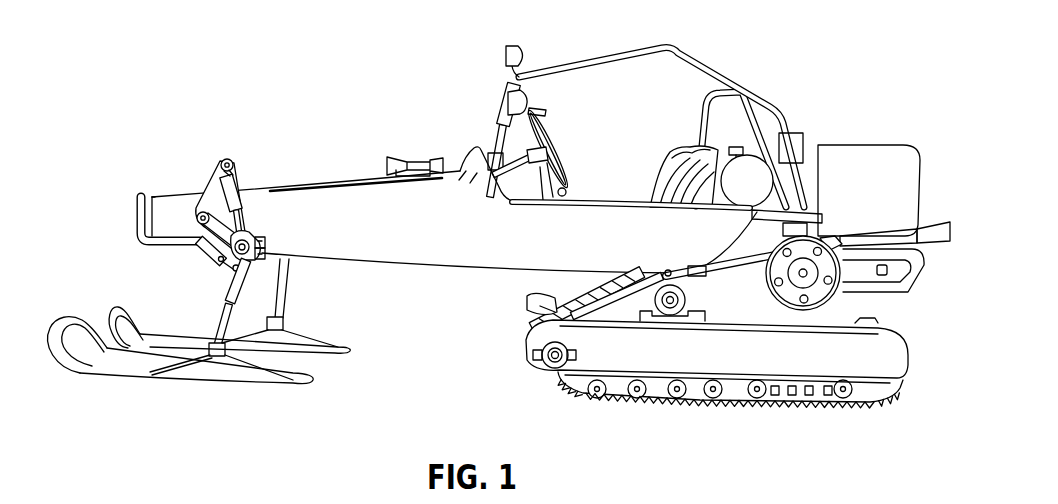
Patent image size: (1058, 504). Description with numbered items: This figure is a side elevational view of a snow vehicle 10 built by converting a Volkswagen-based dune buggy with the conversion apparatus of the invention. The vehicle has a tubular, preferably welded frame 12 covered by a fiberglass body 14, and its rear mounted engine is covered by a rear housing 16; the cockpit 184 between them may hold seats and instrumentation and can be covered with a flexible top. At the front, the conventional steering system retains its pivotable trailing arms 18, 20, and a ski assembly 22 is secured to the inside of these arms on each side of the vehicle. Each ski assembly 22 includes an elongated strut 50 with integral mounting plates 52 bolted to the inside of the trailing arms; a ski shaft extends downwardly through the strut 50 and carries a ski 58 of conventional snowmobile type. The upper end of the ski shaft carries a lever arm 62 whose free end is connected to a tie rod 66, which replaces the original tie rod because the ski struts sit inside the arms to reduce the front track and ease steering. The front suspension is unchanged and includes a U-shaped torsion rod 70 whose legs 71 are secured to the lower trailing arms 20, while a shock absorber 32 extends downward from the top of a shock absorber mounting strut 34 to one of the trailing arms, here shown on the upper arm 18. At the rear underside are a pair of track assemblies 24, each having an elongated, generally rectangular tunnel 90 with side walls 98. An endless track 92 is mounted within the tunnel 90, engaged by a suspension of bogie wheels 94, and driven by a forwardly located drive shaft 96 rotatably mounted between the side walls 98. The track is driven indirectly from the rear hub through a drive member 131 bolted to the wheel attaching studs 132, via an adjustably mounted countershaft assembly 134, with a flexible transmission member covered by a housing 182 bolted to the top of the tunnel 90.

The vehicle 10 is at (318, 112).
The tubular frame 12 is at (700, 57).
The fiberglass body 14 is at (317, 191).
The rear housing 16 is at (897, 143).
The trailing arm 18 is at (231, 232).
The trailing arm 20 is at (207, 252).
The ski assembly 22 is at (240, 312).
The track assembly 24 is at (517, 293).
The shock absorber 32 is at (234, 176).
The shock absorber mounting strut 34 is at (213, 180).
The elongated strut 50 is at (222, 316).
The mounting plates 52 is at (239, 285).
The ski 58 is at (110, 336).
The lever arm 62 is at (266, 255).
The tie rod 66 is at (265, 240).
The torsion rod 70 is at (163, 249).
The legs 71 is at (221, 261).
The tunnel 90 is at (887, 350).
The endless track 92 is at (802, 408).
The bogie wheels 94 is at (603, 393).
The drive shaft 96 is at (537, 365).
The side walls 98 is at (613, 350).
The drive member 131 is at (812, 270).
The wheel attaching studs 132 is at (825, 236).
The countershaft assembly 134 is at (672, 260).
The housing 182 is at (610, 308).
The cockpit 184 is at (598, 86).